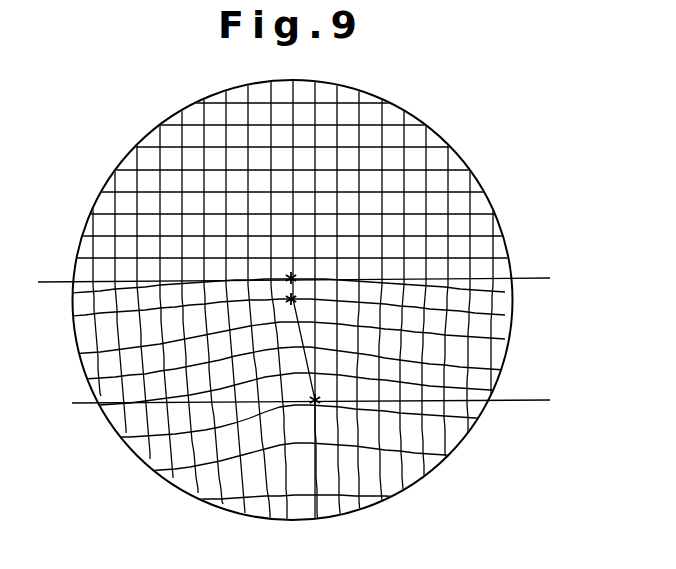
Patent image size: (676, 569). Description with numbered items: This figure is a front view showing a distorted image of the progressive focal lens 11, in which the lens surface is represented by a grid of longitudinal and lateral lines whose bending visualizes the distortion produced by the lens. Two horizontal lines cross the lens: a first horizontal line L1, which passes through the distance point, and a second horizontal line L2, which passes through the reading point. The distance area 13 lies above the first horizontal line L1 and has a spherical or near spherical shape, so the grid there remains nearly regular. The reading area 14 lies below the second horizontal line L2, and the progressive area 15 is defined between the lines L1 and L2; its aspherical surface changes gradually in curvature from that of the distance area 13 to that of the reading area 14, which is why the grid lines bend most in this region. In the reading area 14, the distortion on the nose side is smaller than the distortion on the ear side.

The lens 11 is at (441, 130).
The distance area 13 is at (455, 177).
The reading area 14 is at (372, 488).
The progressive area 15 is at (500, 337).
The first horizontal line L1 is at (498, 273).
The second horizontal line L2 is at (490, 387).